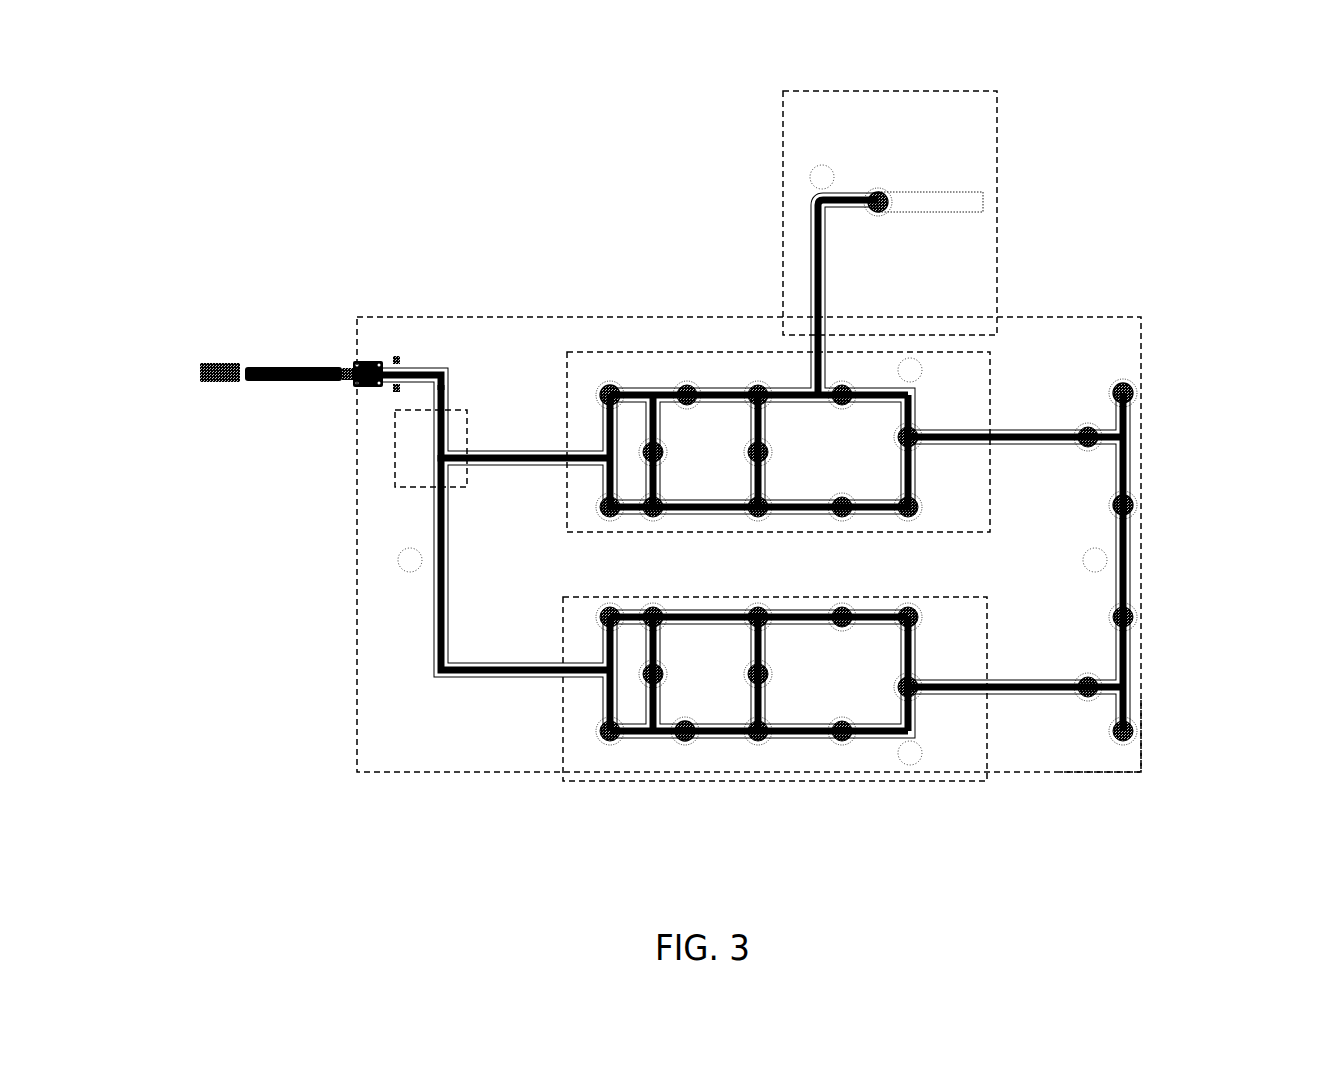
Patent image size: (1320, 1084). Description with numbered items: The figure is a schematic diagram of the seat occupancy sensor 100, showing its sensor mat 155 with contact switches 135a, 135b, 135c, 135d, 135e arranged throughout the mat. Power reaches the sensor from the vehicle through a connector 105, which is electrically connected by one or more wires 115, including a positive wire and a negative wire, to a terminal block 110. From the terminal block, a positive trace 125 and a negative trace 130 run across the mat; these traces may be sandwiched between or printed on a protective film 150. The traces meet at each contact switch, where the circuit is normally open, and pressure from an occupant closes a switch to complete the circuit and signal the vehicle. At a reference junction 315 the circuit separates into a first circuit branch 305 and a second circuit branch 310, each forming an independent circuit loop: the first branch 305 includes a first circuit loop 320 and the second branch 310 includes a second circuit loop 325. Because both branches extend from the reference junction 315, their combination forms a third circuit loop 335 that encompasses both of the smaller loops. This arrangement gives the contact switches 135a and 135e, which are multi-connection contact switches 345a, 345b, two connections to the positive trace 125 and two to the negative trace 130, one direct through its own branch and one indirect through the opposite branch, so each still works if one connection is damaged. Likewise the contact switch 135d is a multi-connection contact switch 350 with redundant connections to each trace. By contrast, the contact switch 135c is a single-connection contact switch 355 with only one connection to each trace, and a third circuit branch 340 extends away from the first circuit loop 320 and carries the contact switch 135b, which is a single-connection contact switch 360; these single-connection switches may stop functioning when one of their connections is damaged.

The seat occupancy sensor 100 is at (702, 457).
The connector 105 is at (200, 362).
The terminal block 110 is at (365, 360).
The wires 115 is at (338, 368).
The positive trace 125 is at (450, 372).
The negative trace 130 is at (438, 440).
The contact switch 135a is at (608, 383).
The contact switch 135b is at (878, 190).
The contact switch 135c is at (1125, 383).
The contact switch 135d is at (1140, 490).
The contact switch 135e is at (685, 742).
The protective film 150 is at (437, 492).
The sensor mat 155 is at (997, 243).
The first circuit branch 305 is at (549, 455).
The second circuit branch 310 is at (550, 677).
The reference junction 315 is at (395, 418).
The first circuit loop 320 is at (953, 533).
The second circuit loop 325 is at (697, 597).
The third circuit loop 335 is at (1150, 765).
The third circuit branch 340 is at (997, 265).
The multi-connection contact switch 345a is at (622, 388).
The multi-connection contact switch 345b is at (690, 742).
The multi-connection contact switch 350 is at (1135, 510).
The single-connection contact switch 355 is at (1135, 388).
The single-connection contact switch 360 is at (882, 212).